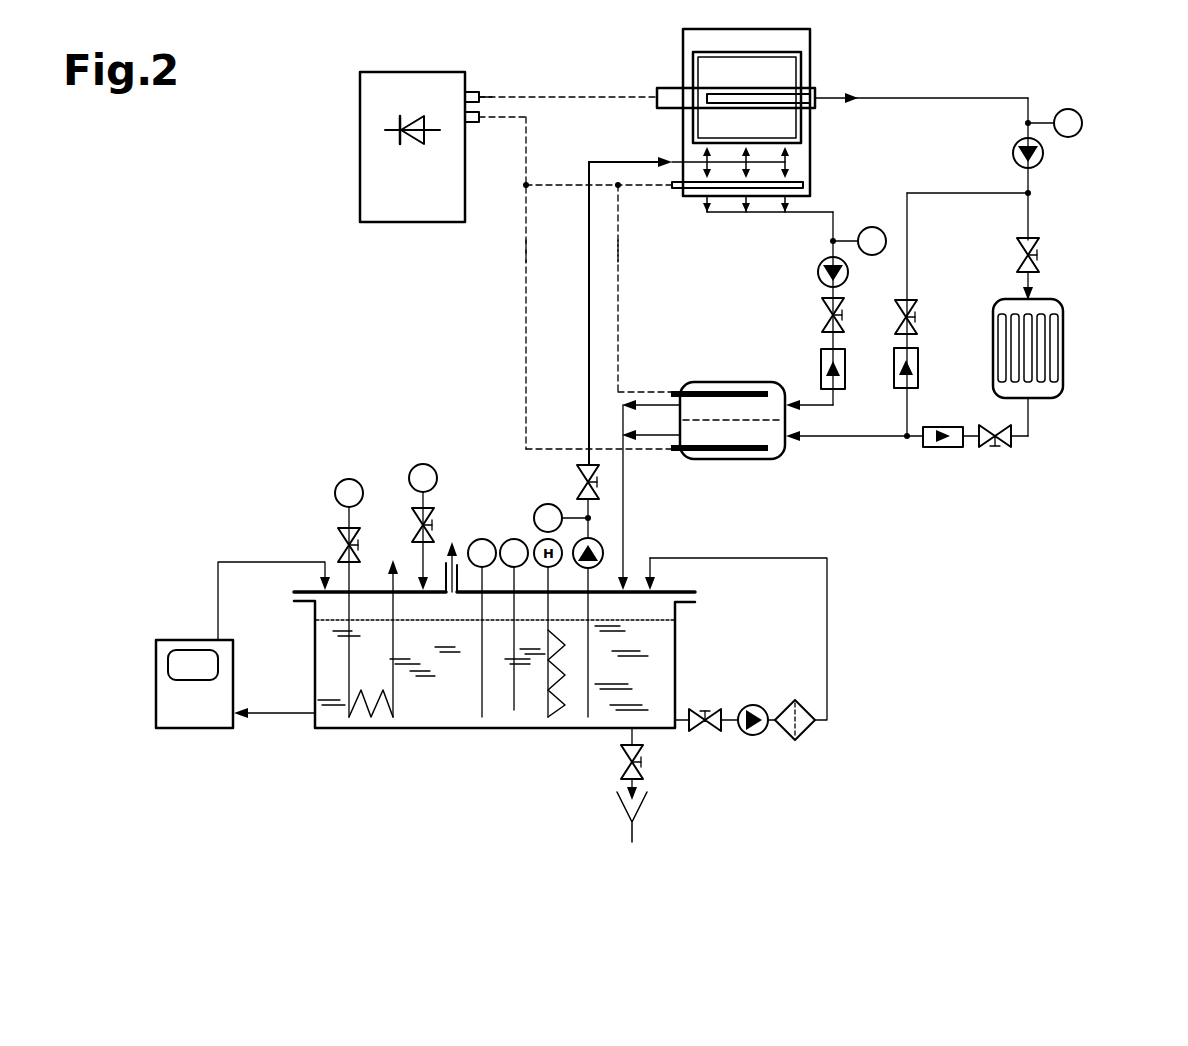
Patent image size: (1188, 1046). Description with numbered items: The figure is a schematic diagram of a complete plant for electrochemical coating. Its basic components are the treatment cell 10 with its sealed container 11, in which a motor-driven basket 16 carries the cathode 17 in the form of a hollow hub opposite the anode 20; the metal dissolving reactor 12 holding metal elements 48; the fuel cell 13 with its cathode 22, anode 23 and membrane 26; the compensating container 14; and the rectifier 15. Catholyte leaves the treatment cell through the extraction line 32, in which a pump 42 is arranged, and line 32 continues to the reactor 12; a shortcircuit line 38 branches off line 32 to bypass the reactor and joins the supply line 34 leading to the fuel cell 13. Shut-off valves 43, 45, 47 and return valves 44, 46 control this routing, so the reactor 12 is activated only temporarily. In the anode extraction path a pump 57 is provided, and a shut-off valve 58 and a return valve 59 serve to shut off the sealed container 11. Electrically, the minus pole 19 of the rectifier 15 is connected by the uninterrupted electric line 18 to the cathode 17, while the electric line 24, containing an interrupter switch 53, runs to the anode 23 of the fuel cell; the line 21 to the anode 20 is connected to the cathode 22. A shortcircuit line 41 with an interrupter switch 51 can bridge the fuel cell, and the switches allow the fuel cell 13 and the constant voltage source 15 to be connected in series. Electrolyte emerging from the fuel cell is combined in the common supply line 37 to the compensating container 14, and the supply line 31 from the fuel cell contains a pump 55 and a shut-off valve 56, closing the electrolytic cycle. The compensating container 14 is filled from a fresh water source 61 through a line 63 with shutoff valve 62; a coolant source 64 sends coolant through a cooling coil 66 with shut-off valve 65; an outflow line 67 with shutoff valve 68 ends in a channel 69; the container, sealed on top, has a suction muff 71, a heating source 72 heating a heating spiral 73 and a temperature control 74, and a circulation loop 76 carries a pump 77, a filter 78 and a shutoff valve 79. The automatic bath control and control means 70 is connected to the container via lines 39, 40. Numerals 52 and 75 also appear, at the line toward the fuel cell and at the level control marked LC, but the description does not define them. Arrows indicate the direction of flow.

The treatment cell 10 is at (789, 120).
The sealed container 11 is at (683, 60).
The metal dissolving reactor 12 is at (1079, 302).
The fuel cell 13 is at (735, 398).
The compensating container 14 is at (537, 688).
The rectifier 15 is at (322, 162).
The basket 16 is at (801, 60).
The cathode 17 is at (778, 108).
The electric line 18 is at (575, 97).
The minus pole 19 is at (480, 95).
The anode 20 is at (803, 186).
The line 21 is at (618, 322).
The cathode 22 is at (745, 392).
The anode 23 is at (742, 452).
The electric line 24 is at (526, 320).
The membrane 26 is at (770, 425).
The supply line 31 is at (605, 160).
The extraction line 32 is at (983, 103).
The supply line 34 is at (845, 440).
The common supply line 37 is at (626, 470).
The shortcircuit line 38 is at (908, 190).
The line 39 is at (275, 715).
The line 40 is at (242, 562).
The shortcircuit line 41 is at (588, 205).
The pump 42 is at (1044, 153).
The shut-off valve 43 is at (917, 310).
The return valve 44 is at (918, 368).
The shut-off valve 45 is at (1007, 448).
The return valve 46 is at (943, 448).
The shut-off valve 47 is at (1040, 245).
The metal elements 48 is at (1060, 332).
The interrupter switch 51 is at (548, 182).
The electrical line 52 is at (620, 255).
The interrupter switch 53 is at (526, 252).
The pump 55 is at (603, 552).
The shut-off valve 56 is at (600, 486).
The pump 57 is at (818, 265).
The shut-off valve 58 is at (822, 310).
The return valve 59 is at (821, 368).
The fresh water source 61 is at (423, 464).
The shutoff valve 62 is at (437, 530).
The line 63 is at (420, 560).
The coolant source 64 is at (349, 479).
The shut-off valve 65 is at (338, 540).
The cooling coil 66 is at (372, 730).
The outflow line 67 is at (620, 732).
The shutoff valve 68 is at (620, 768).
The channel 69 is at (622, 805).
The automatic bath control and control means 70 is at (192, 730).
The suction muff 71 is at (446, 560).
The heating source 72 is at (562, 505).
The heating spiral 73 is at (545, 730).
The temperature control 74 is at (514, 538).
The level controller 75 is at (483, 538).
The circulation loop 76 is at (827, 634).
The pump 77 is at (754, 735).
The filter 78 is at (804, 738).
The shutoff valve 79 is at (706, 733).